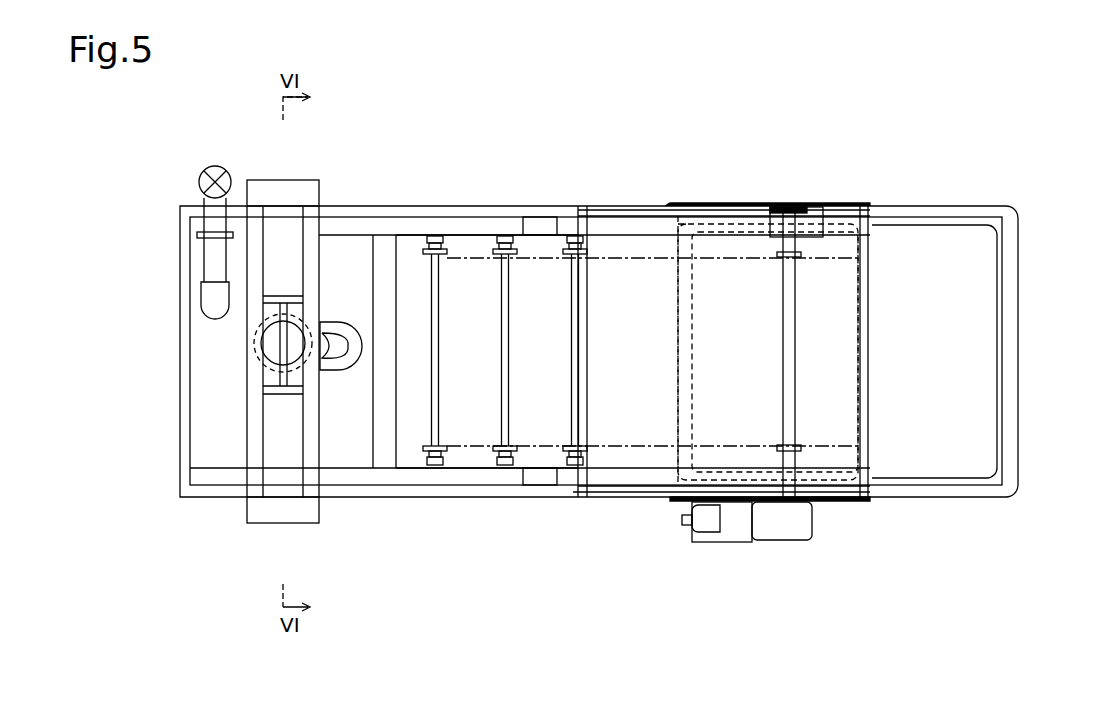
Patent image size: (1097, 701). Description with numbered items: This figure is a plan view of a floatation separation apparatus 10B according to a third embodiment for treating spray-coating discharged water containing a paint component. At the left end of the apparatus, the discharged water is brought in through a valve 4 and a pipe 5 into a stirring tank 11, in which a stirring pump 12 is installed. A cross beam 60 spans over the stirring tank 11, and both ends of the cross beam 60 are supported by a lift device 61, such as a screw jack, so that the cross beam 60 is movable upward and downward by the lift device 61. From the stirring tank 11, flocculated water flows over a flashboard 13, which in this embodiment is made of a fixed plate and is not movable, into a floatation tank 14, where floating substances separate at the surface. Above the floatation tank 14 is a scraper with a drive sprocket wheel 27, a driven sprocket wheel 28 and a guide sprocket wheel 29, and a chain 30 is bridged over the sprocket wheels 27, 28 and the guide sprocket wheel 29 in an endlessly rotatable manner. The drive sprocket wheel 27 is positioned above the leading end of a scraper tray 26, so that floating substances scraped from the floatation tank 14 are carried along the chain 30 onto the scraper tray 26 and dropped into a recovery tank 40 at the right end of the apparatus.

The floatation separation apparatus 10B is at (798, 142).
The stirring tank 11 is at (205, 358).
The stirring pump 12 is at (276, 358).
The flashboard 13 is at (382, 398).
The floatation tank 14 is at (463, 418).
The scraper tray 26 is at (786, 368).
The drive sprocket wheel 27 is at (770, 250).
The driven sprocket wheel 28 is at (447, 250).
The guide sprocket wheel 29 is at (517, 250).
The chain 30 is at (630, 260).
The recovery tank 40 is at (948, 293).
The valve 4 is at (215, 166).
The pipe 5 is at (212, 257).
The cross beam 60 is at (312, 262).
The lift device 61 is at (292, 185).